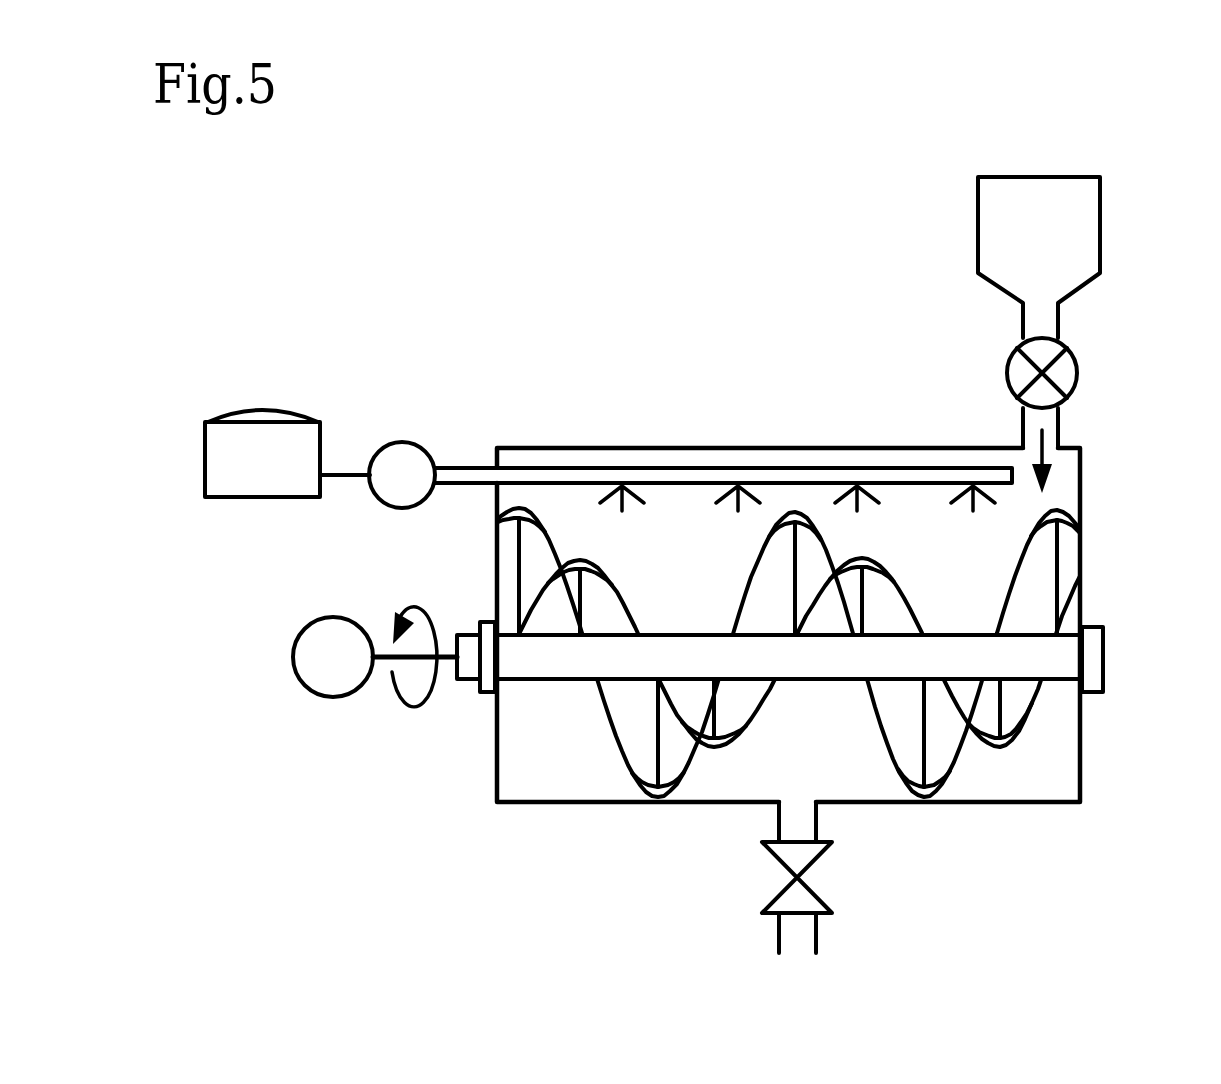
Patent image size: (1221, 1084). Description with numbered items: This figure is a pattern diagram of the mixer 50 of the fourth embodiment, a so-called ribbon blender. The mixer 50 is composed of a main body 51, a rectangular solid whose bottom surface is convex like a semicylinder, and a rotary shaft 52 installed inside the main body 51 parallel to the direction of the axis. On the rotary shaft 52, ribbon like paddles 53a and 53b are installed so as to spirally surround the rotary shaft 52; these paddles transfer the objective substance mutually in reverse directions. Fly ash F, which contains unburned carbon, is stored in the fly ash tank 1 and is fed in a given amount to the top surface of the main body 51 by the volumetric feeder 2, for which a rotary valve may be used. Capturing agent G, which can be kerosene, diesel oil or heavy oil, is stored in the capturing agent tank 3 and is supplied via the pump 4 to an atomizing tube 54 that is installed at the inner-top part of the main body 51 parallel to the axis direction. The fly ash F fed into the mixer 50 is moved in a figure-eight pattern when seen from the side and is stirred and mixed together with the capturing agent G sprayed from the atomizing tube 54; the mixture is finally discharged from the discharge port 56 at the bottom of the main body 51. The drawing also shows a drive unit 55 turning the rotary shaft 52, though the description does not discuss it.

The mixer 50 is at (592, 214).
The fly ash tank 1 is at (1102, 247).
The volumetric feeder 2 is at (1073, 372).
The capturing agent tank 3 is at (300, 415).
The pump 4 is at (407, 442).
The main body 51 is at (1082, 752).
The rotary shaft 52 is at (538, 683).
The ribbon like paddle 53a is at (612, 736).
The ribbon like paddle 53b is at (1025, 748).
The atomizing tube 54 is at (805, 466).
The motor 55 is at (332, 697).
The discharge port 56 is at (817, 856).
The capturing agent G is at (713, 497).
The fly ash F is at (1060, 483).